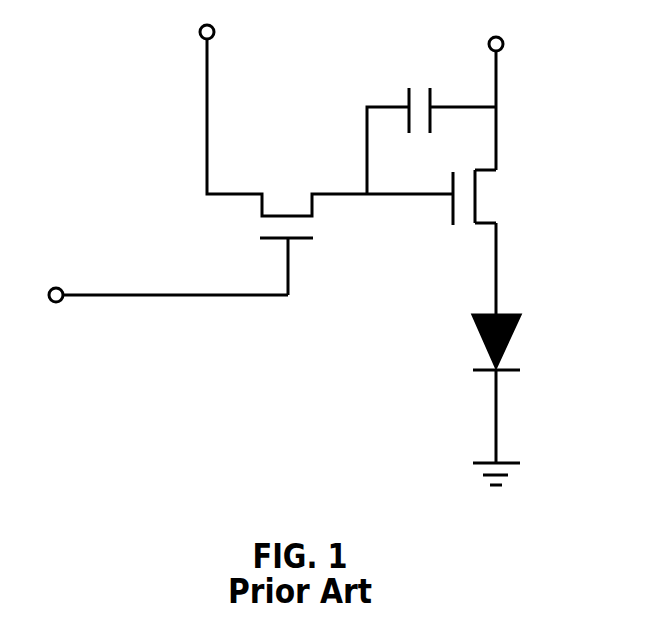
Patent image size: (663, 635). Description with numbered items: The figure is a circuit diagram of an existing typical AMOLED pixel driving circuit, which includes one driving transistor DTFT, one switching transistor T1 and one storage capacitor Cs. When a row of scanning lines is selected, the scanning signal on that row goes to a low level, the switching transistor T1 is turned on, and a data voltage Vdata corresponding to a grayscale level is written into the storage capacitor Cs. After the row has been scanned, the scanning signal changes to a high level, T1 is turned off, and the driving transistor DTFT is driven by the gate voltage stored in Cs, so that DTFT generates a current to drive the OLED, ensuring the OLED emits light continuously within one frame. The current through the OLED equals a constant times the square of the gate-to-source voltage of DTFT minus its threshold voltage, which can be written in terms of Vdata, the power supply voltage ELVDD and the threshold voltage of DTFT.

The data voltage Vdata is at (326, 117).
The switching transistor T1 is at (308, 265).
The storage capacitor Cs is at (431, 127).
The power supply voltage ELVDD is at (543, 99).
The driving transistor DTFT is at (522, 242).
The organic light emitting diode OLED is at (535, 400).